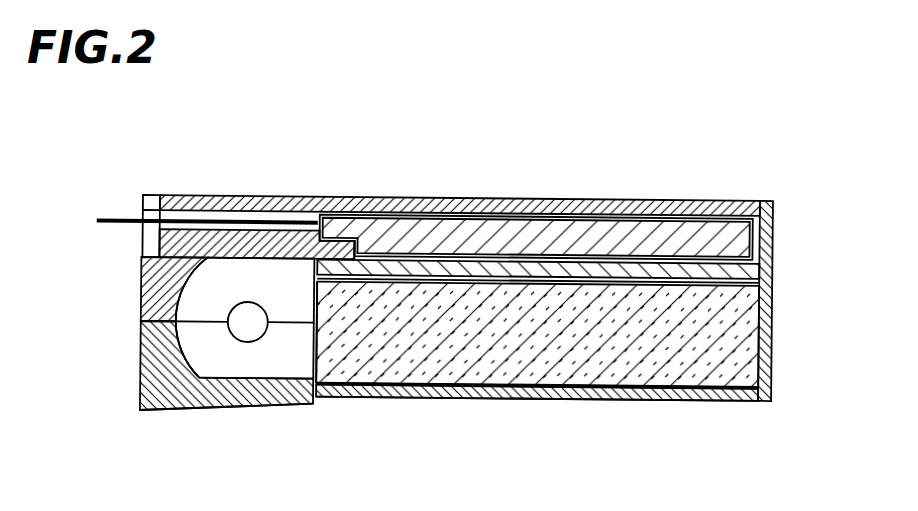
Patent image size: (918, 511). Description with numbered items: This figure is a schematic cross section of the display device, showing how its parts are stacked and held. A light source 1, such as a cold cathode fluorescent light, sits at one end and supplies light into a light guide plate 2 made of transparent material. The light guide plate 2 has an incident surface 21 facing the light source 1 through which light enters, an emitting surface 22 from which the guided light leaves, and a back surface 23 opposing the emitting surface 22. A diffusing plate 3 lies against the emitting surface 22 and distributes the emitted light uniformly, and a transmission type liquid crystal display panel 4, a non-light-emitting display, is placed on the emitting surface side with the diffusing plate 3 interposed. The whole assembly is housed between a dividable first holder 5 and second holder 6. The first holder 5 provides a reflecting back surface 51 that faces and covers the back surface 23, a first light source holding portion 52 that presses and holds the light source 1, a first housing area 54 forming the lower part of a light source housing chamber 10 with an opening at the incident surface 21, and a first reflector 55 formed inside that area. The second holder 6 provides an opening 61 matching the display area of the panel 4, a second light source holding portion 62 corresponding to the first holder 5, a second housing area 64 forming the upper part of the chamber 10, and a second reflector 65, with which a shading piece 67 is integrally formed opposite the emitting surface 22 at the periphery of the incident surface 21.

The light source 1 is at (256, 302).
The light guide plate 2 is at (743, 352).
The diffusing plate 3 is at (752, 272).
The transmission type liquid crystal display panel 4 is at (527, 235).
The first holder 5 is at (378, 396).
The second holder 6 is at (202, 195).
The light source housing chamber 10 is at (232, 358).
The incident surface 21 is at (321, 351).
The emitting surface 22 is at (657, 278).
The back surface 23 is at (617, 386).
The reflecting back surface 51 is at (520, 388).
The first light source holding portion 52 is at (272, 372).
The first housing area 54 is at (198, 348).
The first reflector 55 is at (198, 380).
The opening 61 is at (593, 215).
The second light source holding portion 62 is at (150, 252).
The second housing area 64 is at (198, 312).
The second reflector 65 is at (208, 277).
The shading piece 67 is at (350, 238).